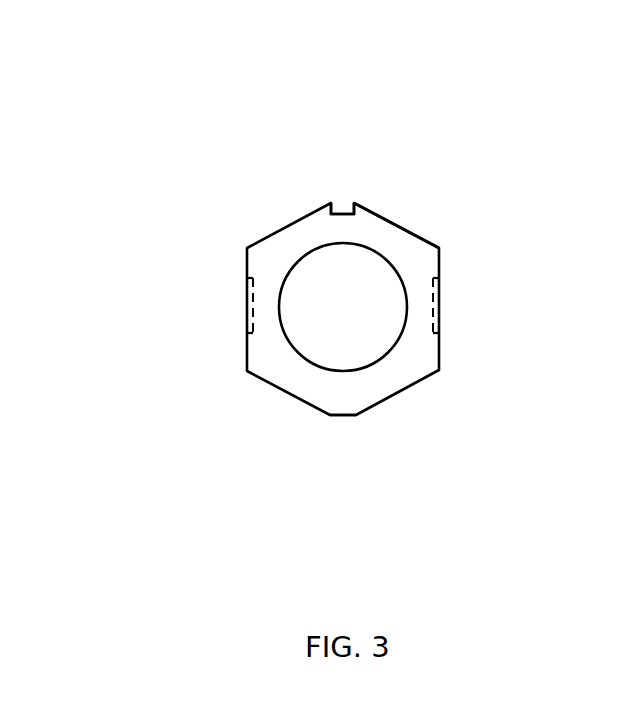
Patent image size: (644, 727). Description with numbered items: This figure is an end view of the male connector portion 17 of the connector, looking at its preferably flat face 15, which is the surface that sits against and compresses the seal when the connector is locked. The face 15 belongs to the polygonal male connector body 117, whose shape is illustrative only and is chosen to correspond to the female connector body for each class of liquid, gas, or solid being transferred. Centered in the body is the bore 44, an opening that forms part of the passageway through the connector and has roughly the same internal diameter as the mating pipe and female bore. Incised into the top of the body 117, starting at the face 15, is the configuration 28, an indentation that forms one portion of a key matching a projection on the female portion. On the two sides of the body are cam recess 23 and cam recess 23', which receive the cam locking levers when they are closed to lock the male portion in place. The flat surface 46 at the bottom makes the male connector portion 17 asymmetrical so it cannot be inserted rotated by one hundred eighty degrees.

The face 15 is at (284, 263).
The male connector portion 17 is at (257, 186).
The configuration 28 is at (343, 207).
The male connector body 117 is at (413, 230).
The cam recess 23 is at (162, 295).
The cam recess 23' is at (526, 295).
The bore 44 is at (353, 338).
The surface 46 is at (338, 415).